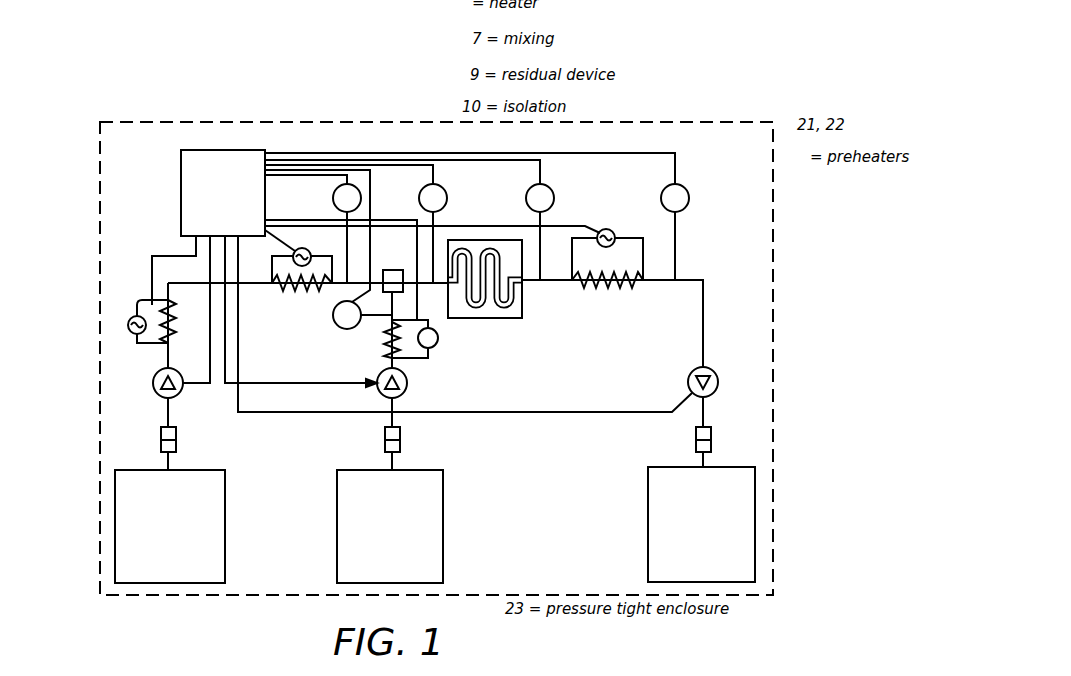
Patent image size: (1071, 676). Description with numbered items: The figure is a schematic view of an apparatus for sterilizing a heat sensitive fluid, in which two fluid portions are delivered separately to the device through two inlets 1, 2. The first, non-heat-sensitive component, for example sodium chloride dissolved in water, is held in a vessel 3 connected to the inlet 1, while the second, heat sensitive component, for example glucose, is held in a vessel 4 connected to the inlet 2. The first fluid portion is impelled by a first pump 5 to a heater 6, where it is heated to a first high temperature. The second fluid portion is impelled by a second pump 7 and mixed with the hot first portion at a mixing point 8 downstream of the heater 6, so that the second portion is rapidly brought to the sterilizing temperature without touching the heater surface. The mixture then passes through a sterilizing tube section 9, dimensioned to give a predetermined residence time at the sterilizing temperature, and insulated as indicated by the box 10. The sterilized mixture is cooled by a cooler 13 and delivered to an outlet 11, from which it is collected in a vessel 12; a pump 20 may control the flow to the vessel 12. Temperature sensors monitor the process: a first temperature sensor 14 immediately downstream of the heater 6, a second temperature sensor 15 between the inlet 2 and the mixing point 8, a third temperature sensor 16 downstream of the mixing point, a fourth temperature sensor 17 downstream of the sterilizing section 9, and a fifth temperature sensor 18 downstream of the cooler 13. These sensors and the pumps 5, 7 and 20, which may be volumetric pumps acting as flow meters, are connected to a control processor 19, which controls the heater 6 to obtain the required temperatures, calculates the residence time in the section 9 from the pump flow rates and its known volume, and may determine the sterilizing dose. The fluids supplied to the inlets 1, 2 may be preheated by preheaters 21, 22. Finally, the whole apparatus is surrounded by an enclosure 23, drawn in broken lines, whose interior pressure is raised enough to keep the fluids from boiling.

The inlet 1 is at (161, 441).
The inlet 2 is at (385, 441).
The vessel 3 is at (222, 470).
The vessel 4 is at (432, 470).
The first pump 5 is at (155, 377).
The heater 6 is at (300, 296).
The second pump 7 is at (407, 385).
The mixing point 8 is at (393, 270).
The sterilizing tube section 9 is at (478, 318).
The insulation box 10 is at (507, 318).
The outlet 11 is at (696, 441).
The vessel 12 is at (738, 467).
The cooler 13 is at (610, 292).
The first temperature sensor 14 is at (333, 198).
The second temperature sensor 15 is at (337, 326).
The third temperature sensor 16 is at (447, 198).
The fourth temperature sensor 17 is at (554, 198).
The fifth temperature sensor 18 is at (689, 198).
The control processor 19 is at (181, 198).
The pump 20 is at (689, 375).
The preheater 21 is at (160, 305).
The preheater 22 is at (384, 347).
The enclosure 23 is at (535, 595).